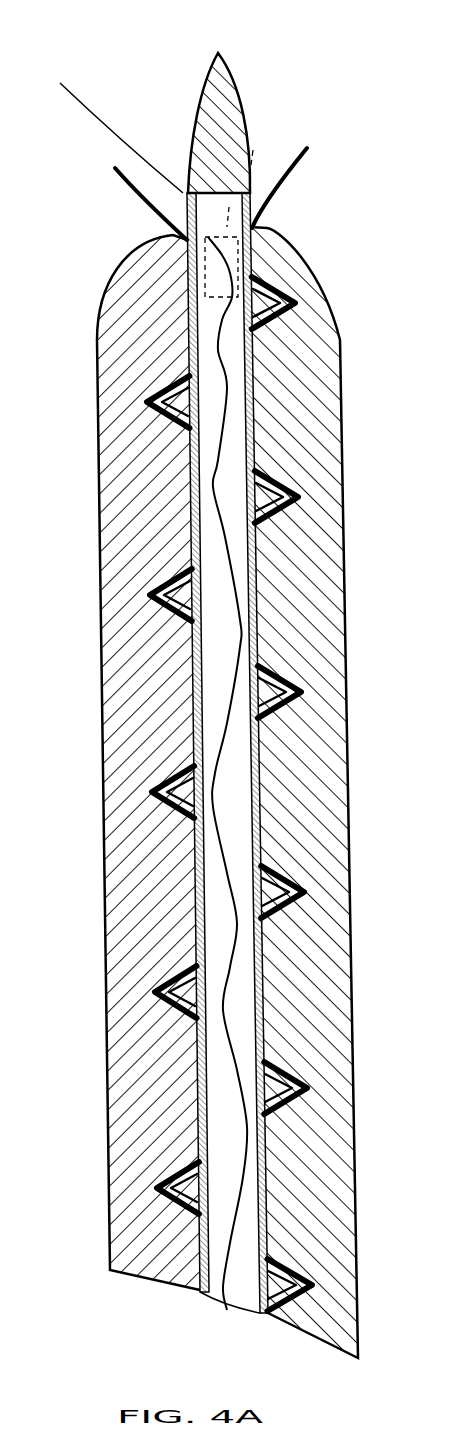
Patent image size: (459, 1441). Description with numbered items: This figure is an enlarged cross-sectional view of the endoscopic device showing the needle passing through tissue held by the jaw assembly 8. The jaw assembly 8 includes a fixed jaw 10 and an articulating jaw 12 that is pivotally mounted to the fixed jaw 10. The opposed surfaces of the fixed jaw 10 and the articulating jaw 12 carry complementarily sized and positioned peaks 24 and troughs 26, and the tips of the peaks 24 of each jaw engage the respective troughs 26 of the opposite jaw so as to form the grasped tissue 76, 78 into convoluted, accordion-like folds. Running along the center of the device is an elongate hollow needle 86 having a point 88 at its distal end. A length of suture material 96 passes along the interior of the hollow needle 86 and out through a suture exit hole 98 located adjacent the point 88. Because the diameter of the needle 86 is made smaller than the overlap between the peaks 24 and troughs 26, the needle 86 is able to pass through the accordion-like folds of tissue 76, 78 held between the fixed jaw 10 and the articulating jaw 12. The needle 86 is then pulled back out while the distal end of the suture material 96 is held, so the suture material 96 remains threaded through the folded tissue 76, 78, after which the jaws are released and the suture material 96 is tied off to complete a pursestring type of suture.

The jaw assembly 8 is at (356, 294).
The fixed jaw 10 is at (352, 478).
The articulating jaw 12 is at (92, 633).
The peaks 24 is at (302, 917).
The troughs 26 is at (306, 1088).
The tissue 76 is at (293, 172).
The tissue 78 is at (123, 180).
The elongate hollow needle 86 is at (207, 1295).
The point 88 is at (221, 54).
The suture material 96 is at (68, 83).
The suture exit hole 98 is at (253, 150).